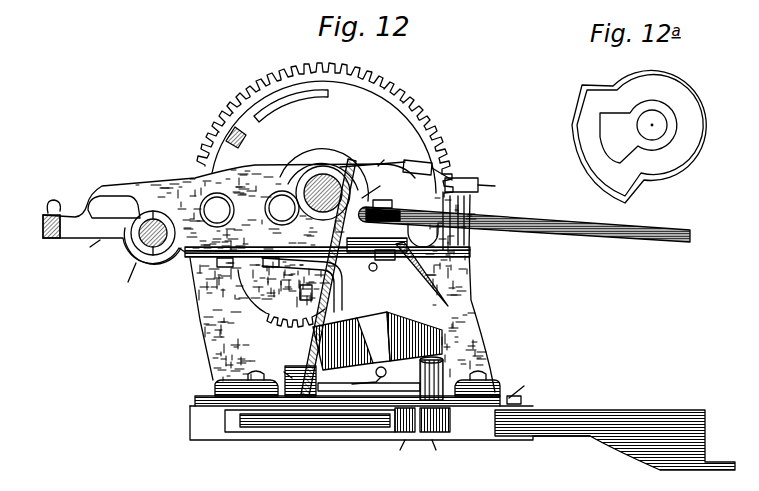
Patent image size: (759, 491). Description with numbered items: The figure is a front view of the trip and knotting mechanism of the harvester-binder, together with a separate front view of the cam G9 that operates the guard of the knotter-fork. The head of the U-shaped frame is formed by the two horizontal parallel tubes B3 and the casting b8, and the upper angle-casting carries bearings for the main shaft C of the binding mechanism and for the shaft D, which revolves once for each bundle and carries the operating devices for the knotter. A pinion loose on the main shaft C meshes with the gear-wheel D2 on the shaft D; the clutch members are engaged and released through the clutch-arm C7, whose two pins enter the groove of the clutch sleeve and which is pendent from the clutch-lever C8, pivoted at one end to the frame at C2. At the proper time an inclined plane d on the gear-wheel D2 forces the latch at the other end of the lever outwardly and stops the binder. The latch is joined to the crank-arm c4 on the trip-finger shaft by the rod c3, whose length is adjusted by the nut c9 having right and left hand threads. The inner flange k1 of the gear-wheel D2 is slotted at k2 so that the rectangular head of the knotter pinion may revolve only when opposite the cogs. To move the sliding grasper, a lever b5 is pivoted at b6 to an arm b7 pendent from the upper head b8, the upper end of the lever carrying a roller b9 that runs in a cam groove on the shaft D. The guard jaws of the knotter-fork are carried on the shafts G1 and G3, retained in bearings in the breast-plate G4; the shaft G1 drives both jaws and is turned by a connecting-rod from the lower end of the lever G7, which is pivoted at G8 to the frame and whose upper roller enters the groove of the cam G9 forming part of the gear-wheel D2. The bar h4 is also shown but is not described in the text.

In FIG. 12, the gear-wheel D2 is at (325, 130).
In FIG. 12, the slot k2 is at (291, 106).
In FIG. 12, the inclined plane d is at (238, 144).
In FIG. 12, the cam G9 is at (324, 171).
In FIG. 12A, the cam G9 is at (639, 136).
In FIG. 12, the shaft D is at (323, 193).
In FIG. 12, the clutch-lever C8 is at (269, 278).
In FIG. 12, the pivot C2 is at (52, 210).
In FIG. 12, the upper head b8 is at (167, 239).
In FIG. 12, the main shaft C is at (153, 233).
In FIG. 12, the clutch-arm C7 is at (144, 264).
In FIG. 12, the parallel tubes B3 is at (249, 209).
In FIG. 12, the rod c3 is at (372, 154).
In FIG. 12, the nut c9 is at (427, 170).
In FIG. 12, the roller b9 is at (331, 285).
In FIG. 12, the crank-arm c4 is at (478, 185).
In FIG. 12, the pivot G8 is at (518, 256).
In FIG. 12, the arm b7 is at (302, 284).
In FIG. 12, the pivot b6 is at (281, 298).
In FIG. 12, the lever G7 is at (377, 340).
In FIG. 12, the lever b5 is at (328, 277).
In FIG. 12, the inner flange k1 is at (361, 364).
In FIG. 12, the bar h4 is at (369, 389).
In FIG. 12, the shaft G1 is at (437, 413).
In FIG. 12, the shaft G3 is at (402, 438).
In FIG. 12, the breast-plate G4 is at (462, 420).